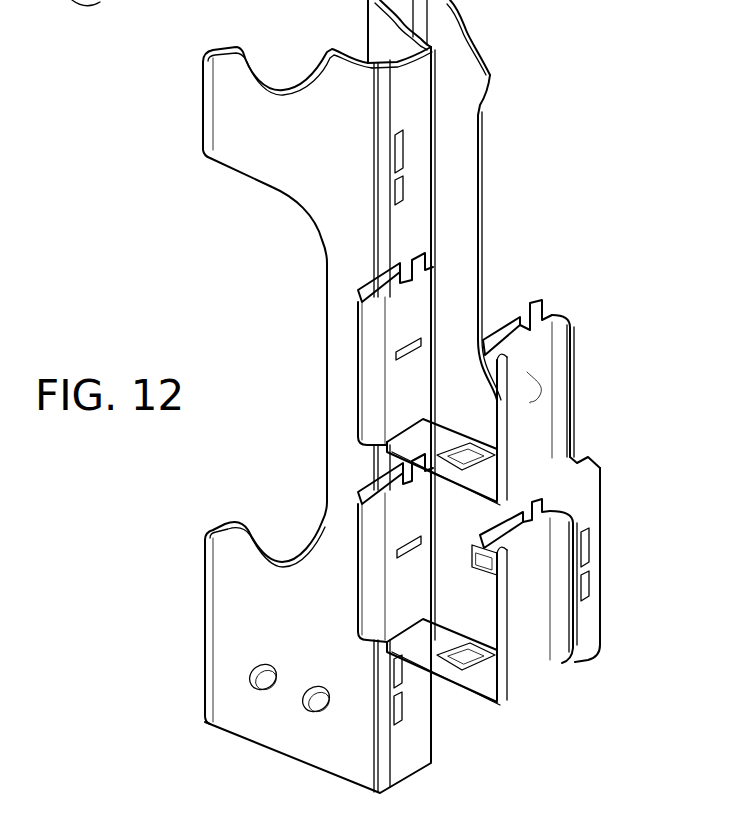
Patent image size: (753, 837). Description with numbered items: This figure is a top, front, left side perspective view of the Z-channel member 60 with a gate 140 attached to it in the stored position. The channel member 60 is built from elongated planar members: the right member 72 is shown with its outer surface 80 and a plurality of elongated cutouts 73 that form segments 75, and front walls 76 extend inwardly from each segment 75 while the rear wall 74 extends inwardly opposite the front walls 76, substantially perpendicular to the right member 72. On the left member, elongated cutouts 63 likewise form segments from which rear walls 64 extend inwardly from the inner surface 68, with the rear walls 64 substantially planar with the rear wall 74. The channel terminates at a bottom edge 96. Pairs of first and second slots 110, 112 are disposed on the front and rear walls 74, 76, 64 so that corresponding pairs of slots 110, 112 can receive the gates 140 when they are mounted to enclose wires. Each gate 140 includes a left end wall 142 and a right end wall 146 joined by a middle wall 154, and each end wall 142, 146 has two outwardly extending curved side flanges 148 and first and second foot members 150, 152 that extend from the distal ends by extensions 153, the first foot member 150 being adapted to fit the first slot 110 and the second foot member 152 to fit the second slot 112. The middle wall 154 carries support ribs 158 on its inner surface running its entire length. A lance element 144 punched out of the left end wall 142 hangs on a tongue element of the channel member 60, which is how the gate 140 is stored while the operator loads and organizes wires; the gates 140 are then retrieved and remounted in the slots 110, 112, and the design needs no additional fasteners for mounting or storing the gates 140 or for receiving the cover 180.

The Z-channel member 60 is at (188, 124).
The elongated cutouts 63 is at (478, 237).
The rear walls 64 is at (585, 507).
The inner surface 68 is at (575, 462).
The right member 72 is at (227, 688).
The elongated cutouts 73 is at (325, 288).
The rear wall 74 is at (415, 82).
The segments 75 is at (242, 157).
The front walls 76 is at (240, 60).
The outer surface 80 is at (250, 620).
The bottom edge 96 is at (432, 605).
The first slots 110 is at (405, 150).
The second slots 112 is at (405, 186).
The gate 140 is at (577, 426).
The left end wall 142 is at (403, 302).
The lance element 144 is at (403, 352).
The right end wall 146 is at (530, 403).
The curved side flanges 148 is at (560, 330).
The first foot member 150 is at (377, 272).
The second foot member 152 is at (415, 258).
The extensions 153 is at (43, 0).
The middle wall 154 is at (433, 443).
The support ribs 158 is at (457, 678).
The cover 180 is at (310, 704).